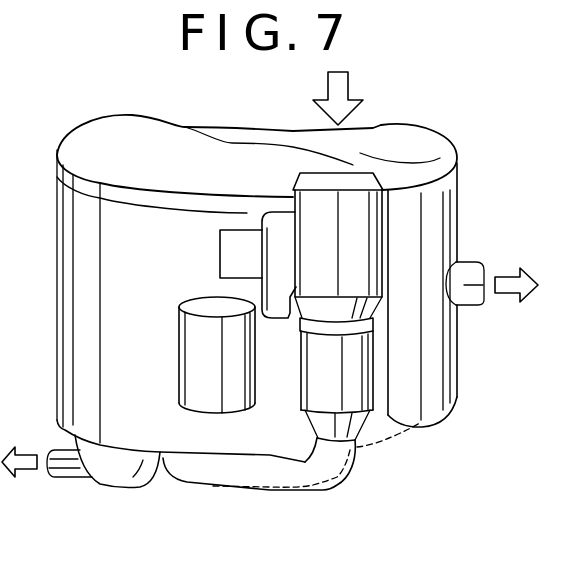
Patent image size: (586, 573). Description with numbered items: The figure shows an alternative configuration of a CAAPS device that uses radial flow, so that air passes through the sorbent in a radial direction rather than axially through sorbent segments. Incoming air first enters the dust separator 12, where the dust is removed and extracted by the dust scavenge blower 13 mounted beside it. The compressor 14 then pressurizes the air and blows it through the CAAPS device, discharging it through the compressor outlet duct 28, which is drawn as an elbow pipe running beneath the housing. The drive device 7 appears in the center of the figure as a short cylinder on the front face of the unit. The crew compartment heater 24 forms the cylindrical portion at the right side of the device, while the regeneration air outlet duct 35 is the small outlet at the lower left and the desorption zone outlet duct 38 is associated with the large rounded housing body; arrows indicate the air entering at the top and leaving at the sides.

The drive device 7 is at (197, 337).
The dust separator 12 is at (370, 178).
The dust scavenge blower 13 is at (227, 238).
The compressor 14 is at (353, 383).
The crew compartment heater 24 is at (455, 213).
The compressor outlet duct 28 is at (302, 468).
The regeneration air outlet duct 35 is at (110, 473).
The desorption zone outlet duct 38 is at (132, 115).